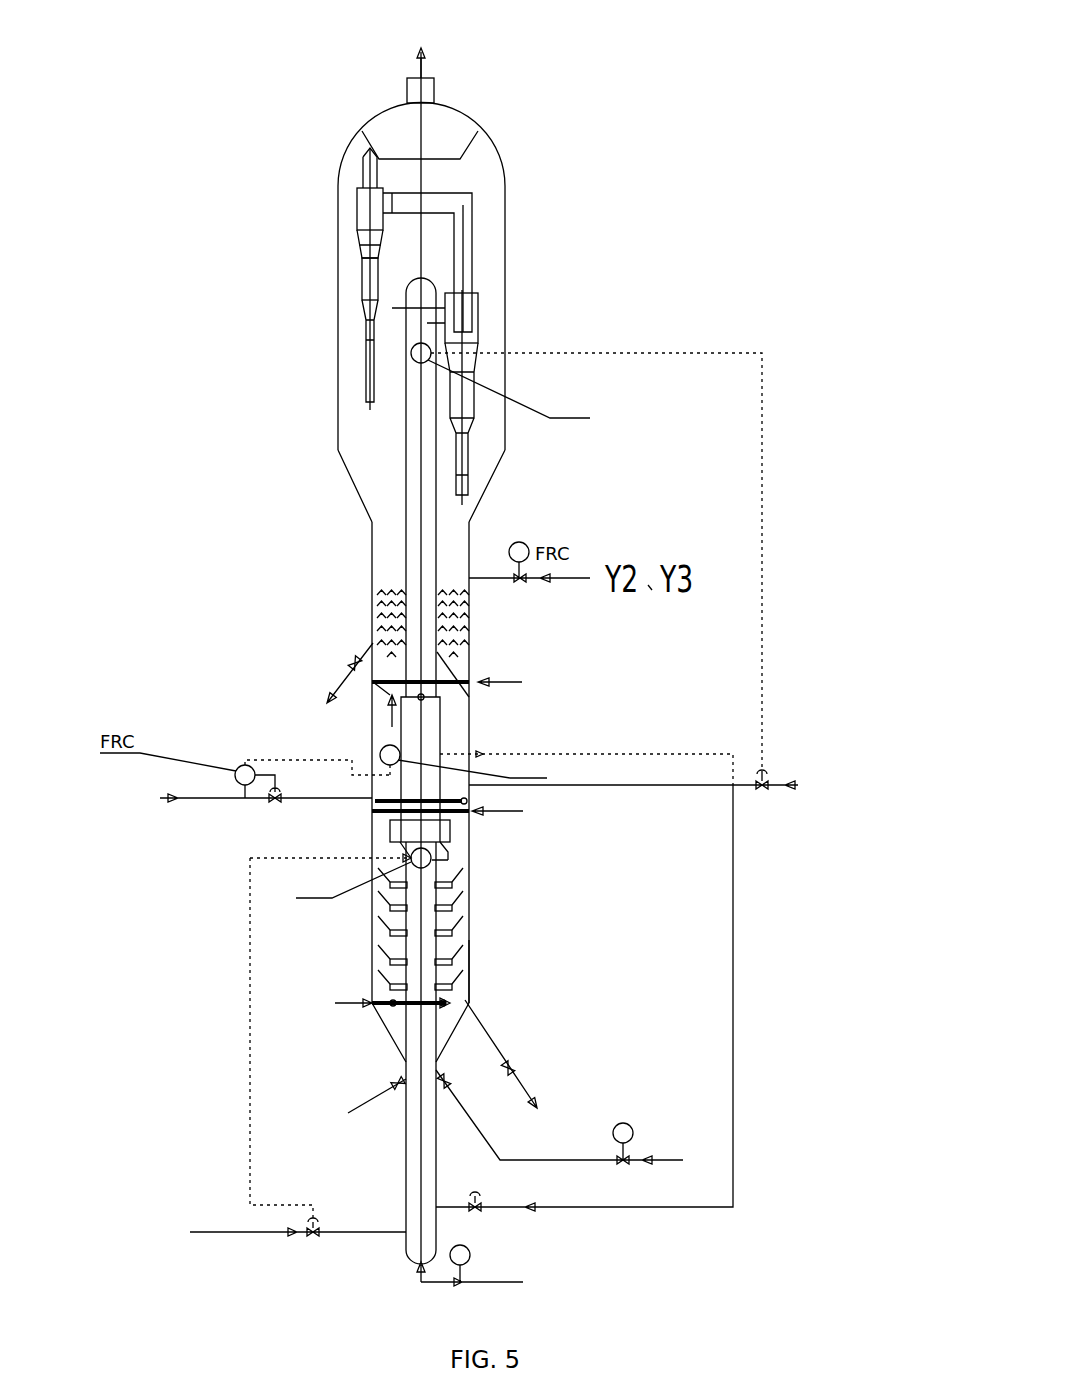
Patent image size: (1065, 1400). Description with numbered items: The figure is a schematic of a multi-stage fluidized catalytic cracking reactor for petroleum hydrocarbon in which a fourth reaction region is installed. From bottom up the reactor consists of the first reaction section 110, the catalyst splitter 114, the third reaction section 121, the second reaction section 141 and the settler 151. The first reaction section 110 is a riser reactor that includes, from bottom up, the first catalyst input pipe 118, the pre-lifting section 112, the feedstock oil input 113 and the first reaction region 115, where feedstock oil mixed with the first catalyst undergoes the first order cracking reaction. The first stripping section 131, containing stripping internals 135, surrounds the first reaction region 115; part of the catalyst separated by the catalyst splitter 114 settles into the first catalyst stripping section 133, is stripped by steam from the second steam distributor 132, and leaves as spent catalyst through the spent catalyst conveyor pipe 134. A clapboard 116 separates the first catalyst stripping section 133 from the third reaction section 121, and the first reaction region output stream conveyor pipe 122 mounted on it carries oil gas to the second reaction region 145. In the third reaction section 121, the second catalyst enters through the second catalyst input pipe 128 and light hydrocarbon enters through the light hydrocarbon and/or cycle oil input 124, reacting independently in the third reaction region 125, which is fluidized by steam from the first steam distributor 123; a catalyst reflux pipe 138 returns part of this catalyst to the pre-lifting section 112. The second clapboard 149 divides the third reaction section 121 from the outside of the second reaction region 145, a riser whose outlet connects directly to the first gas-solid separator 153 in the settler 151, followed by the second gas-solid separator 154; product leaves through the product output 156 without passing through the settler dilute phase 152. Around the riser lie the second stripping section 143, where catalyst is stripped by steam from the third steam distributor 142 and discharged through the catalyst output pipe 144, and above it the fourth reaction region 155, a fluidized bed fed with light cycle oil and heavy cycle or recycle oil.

The first reaction section 110 is at (406, 1128).
The pre-lifting section 112 is at (415, 1143).
The feedstock oil input 113 is at (348, 1113).
The catalyst splitter 114 is at (448, 850).
The first reaction region 115 is at (425, 920).
The clapboard 116 is at (450, 821).
The first catalyst input pipe 118 is at (345, 1232).
The third reaction section 121 is at (372, 750).
The first reaction region output stream conveyor pipe 122 is at (410, 737).
The first steam distributor 123 is at (462, 805).
The light hydrocarbon and/or cycle oil input 124 is at (370, 800).
The third reaction region 125 is at (453, 713).
The second catalyst input pipe 128 is at (742, 785).
The first stripping section 131 is at (470, 965).
The second steam distributor 132 is at (407, 1003).
The first catalyst stripping section 133 is at (388, 943).
The spent catalyst conveyor pipe 134 is at (480, 1043).
The stripping internals 135 is at (450, 885).
The catalyst reflux pipe 138 is at (557, 1207).
The second reaction section 141 is at (372, 588).
The third steam distributor 142 is at (470, 680).
The second stripping section 143 is at (445, 622).
The catalyst output pipe 144 is at (373, 682).
The second reaction region 145 is at (428, 577).
The second clapboard 149 is at (345, 677).
The settler 151 is at (505, 203).
The settler dilute phase 152 is at (480, 265).
The first gas-solid separator 153 is at (473, 340).
The second gas-solid separator 154 is at (285, 263).
The fourth reaction region 155 is at (389, 555).
The product output 156 is at (434, 78).